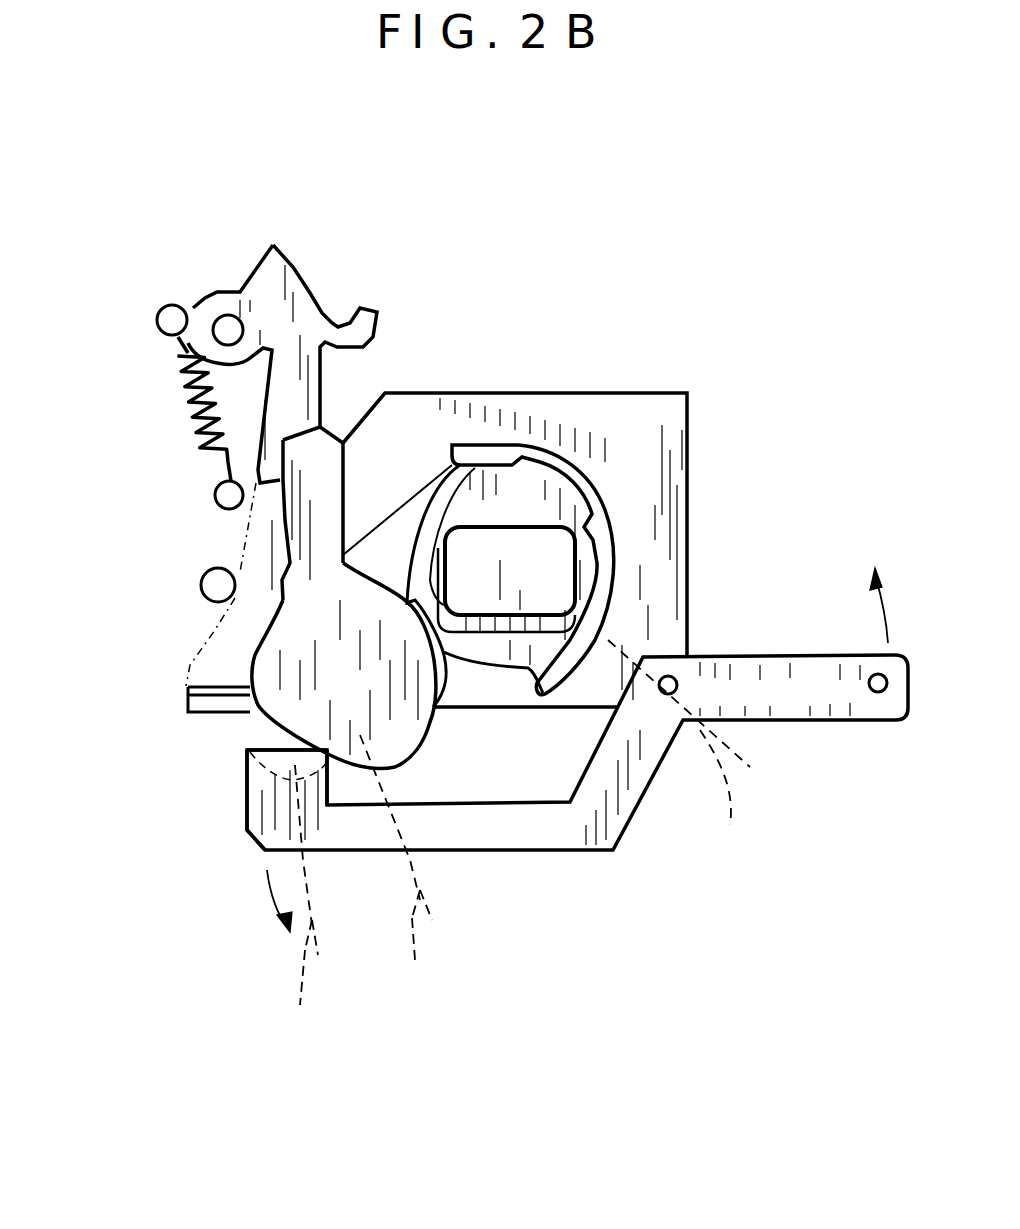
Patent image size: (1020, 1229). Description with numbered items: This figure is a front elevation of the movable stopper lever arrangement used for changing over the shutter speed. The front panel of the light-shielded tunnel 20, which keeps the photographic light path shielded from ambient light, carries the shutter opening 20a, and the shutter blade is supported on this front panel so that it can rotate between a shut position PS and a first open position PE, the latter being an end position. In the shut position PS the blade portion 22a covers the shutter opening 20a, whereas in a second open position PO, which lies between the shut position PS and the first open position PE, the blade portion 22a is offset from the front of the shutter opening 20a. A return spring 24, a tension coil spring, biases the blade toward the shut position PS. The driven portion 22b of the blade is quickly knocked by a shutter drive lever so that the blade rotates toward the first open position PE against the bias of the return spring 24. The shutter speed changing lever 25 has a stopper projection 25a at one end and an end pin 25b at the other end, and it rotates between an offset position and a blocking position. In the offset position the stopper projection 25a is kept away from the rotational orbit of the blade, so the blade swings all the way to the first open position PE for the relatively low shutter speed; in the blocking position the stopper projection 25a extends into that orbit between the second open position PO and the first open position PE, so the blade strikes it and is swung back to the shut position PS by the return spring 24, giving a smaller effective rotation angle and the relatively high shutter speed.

The light-shielded tunnel 20 is at (688, 570).
The shutter opening 20a is at (580, 565).
The blade portion 22a is at (357, 585).
The driven portion 22b is at (258, 272).
The return spring 24 is at (178, 415).
The shutter speed changing lever 25 is at (533, 853).
The stopper projection 25a is at (267, 793).
The end pin 25b is at (885, 720).
The shut position PS is at (680, 752).
The second open position PO is at (400, 870).
The first open position PE is at (294, 906).